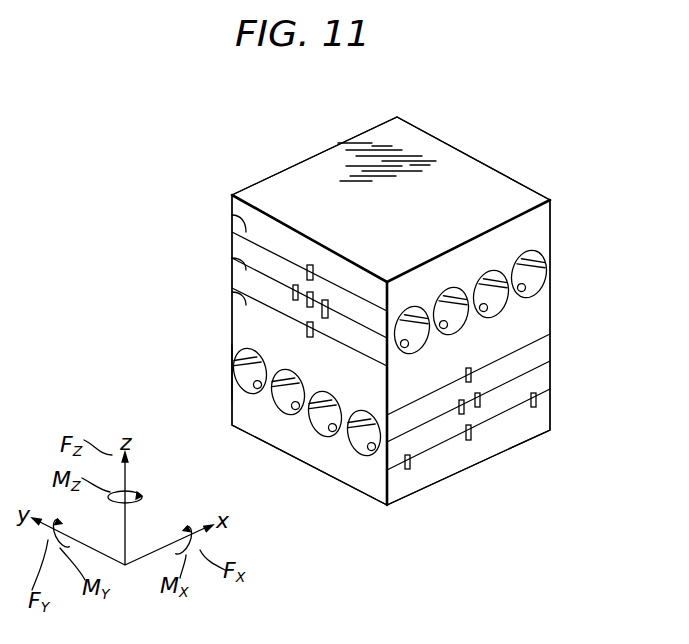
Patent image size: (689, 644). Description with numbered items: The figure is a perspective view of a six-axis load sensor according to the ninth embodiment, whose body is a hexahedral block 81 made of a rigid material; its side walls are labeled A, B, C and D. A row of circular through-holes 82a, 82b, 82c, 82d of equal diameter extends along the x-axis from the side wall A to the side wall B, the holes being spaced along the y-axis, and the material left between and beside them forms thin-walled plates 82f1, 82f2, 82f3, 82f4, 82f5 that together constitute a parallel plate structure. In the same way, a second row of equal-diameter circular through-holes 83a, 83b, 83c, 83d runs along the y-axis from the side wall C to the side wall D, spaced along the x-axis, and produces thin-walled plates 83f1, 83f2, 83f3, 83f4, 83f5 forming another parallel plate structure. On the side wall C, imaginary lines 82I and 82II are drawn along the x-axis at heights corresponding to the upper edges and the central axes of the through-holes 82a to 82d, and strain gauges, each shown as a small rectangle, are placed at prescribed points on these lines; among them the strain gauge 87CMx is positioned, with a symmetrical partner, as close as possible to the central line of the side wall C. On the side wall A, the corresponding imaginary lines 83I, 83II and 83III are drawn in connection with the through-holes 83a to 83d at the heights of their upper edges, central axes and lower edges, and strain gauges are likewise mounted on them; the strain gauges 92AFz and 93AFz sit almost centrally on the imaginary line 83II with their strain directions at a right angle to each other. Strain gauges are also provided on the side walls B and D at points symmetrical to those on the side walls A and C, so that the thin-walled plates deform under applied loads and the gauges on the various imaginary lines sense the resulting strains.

The hexahedral block 81 is at (463, 130).
The side wall A is at (243, 328).
The side wall B is at (475, 158).
The side wall C is at (549, 325).
The side wall D is at (308, 160).
The imaginary line 83I is at (231, 212).
The imaginary line 83II is at (231, 270).
The imaginary line 83III is at (231, 300).
The imaginary line 82I is at (549, 350).
The imaginary line 82II is at (549, 378).
The strain gauge 92AFz is at (294, 292).
The strain gauge 93AFz is at (307, 290).
The strain gauge 87CMx is at (479, 406).
The circular through-hole 82a is at (251, 395).
The circular through-hole 82b is at (293, 415).
The circular through-hole 82c is at (322, 392).
The circular through-hole 82d is at (359, 411).
The circular through-hole 83a is at (416, 346).
The circular through-hole 83b is at (453, 326).
The circular through-hole 83c is at (492, 306).
The circular through-hole 83d is at (549, 246).
The thin-walled plate 82f1 is at (235, 365).
The thin-walled plate 82f2 is at (263, 405).
The thin-walled plate 82f3 is at (320, 442).
The thin-walled plate 82f4 is at (362, 458).
The thin-walled plate 82f5 is at (391, 471).
The thin-walled plate 83f1 is at (395, 322).
The thin-walled plate 83f2 is at (433, 295).
The thin-walled plate 83f3 is at (462, 262).
The thin-walled plate 83f4 is at (518, 262).
The thin-walled plate 83f5 is at (549, 262).